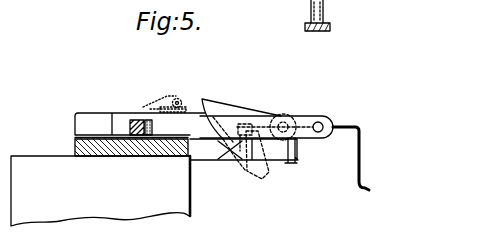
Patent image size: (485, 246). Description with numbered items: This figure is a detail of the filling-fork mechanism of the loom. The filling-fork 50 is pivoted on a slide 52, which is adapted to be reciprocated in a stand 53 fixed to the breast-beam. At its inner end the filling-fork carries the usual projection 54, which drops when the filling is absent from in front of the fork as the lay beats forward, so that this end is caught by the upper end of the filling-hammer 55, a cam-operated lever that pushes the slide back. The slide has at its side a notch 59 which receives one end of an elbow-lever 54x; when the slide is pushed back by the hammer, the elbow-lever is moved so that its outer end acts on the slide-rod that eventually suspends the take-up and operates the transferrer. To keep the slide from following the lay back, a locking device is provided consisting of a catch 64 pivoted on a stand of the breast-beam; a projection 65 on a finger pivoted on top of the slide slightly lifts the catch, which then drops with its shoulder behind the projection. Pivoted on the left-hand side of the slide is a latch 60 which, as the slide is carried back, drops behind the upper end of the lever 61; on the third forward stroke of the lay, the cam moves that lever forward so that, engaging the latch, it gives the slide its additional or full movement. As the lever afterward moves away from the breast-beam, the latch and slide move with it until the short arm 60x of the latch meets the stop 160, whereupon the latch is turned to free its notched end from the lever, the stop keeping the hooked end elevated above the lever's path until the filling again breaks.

The filling-fork 50 is at (361, 168).
The slide 52 is at (311, 115).
The stand 53 is at (71, 121).
The projection 54 is at (243, 149).
The elbow-lever 54x is at (139, 119).
The filling-hammer 55 is at (243, 163).
The notch 59 is at (152, 133).
The latch 60 is at (230, 107).
The short arm of the latch 60x is at (296, 152).
The lever 61 is at (323, 123).
The catch 64 is at (166, 101).
The projection 65 is at (167, 113).
The stop 160 is at (293, 161).